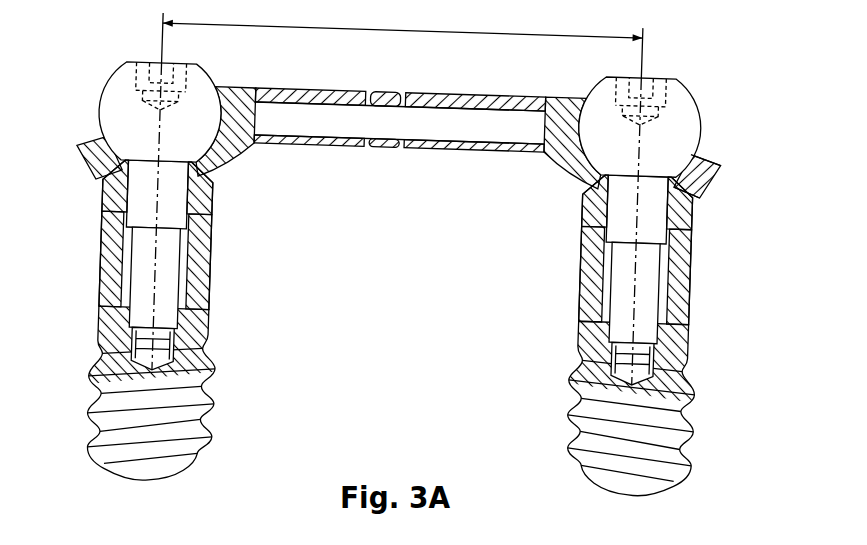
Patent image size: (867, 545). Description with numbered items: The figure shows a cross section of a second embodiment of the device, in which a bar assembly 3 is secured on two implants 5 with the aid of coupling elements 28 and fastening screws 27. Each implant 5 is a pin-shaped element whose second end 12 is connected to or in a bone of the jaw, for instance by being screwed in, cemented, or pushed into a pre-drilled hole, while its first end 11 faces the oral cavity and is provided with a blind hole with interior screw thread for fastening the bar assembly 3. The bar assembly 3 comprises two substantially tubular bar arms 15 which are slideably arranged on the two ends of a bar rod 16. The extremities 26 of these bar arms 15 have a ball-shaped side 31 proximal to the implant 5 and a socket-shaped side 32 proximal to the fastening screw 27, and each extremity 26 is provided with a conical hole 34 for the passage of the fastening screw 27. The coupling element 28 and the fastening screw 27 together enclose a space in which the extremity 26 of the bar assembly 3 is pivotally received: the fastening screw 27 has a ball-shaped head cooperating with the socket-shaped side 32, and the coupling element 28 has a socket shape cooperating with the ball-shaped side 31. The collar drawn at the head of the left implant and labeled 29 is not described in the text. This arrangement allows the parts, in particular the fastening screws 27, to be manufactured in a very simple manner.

The bar assembly 3 is at (362, 174).
The implant 5 is at (680, 327).
The first end 11 is at (688, 245).
The second end 12 is at (673, 450).
The bar arm 15 is at (318, 90).
The bar rod 16 is at (366, 118).
The extremity 26 is at (706, 160).
The fastening screw 27 is at (689, 100).
The coupling element 28 is at (212, 203).
The collar of left screw head 29 is at (92, 167).
The ball-shaped side 31 is at (701, 192).
The socket-shaped side 32 is at (685, 157).
The conical hole 34 is at (584, 190).